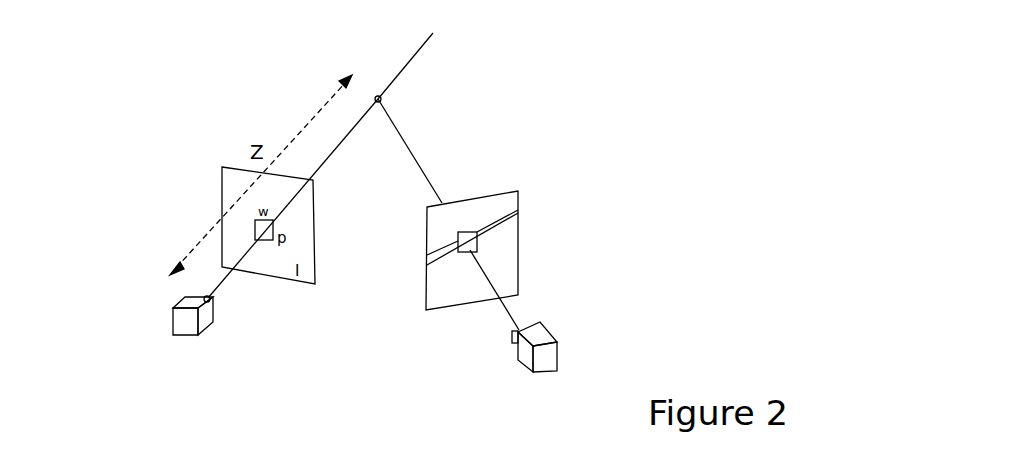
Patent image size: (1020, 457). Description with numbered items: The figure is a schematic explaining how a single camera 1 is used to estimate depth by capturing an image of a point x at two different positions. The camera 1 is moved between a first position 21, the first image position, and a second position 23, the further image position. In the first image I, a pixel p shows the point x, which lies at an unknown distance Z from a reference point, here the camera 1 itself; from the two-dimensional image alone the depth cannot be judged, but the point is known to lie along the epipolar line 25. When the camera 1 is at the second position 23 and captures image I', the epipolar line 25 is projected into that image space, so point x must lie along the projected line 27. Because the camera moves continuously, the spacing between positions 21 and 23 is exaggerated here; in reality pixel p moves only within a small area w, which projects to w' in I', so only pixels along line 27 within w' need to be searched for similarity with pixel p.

The camera 1 is at (156, 304).
The first position 21 is at (187, 338).
The second position 23 is at (512, 368).
The epipolar line 25 is at (412, 49).
The projected line 27 is at (508, 247).